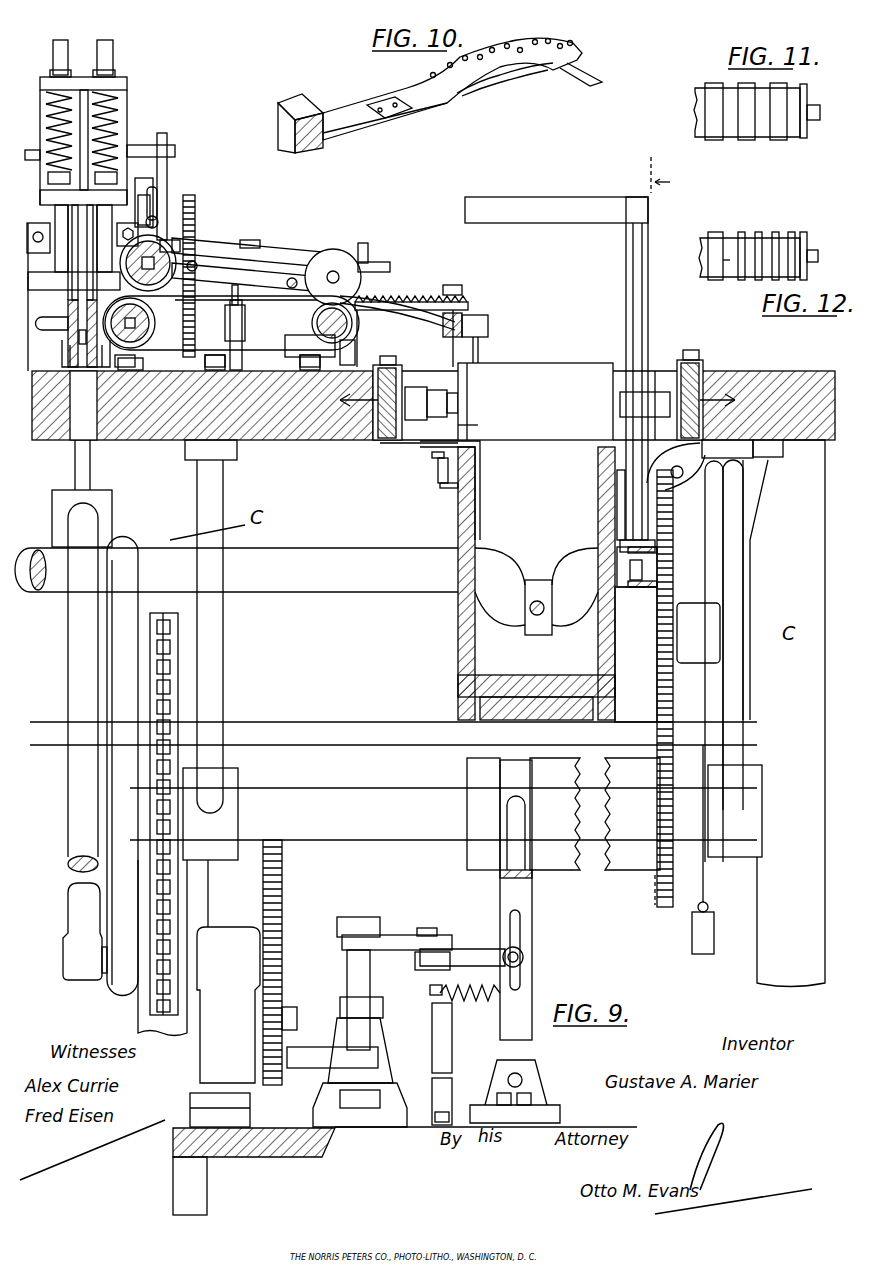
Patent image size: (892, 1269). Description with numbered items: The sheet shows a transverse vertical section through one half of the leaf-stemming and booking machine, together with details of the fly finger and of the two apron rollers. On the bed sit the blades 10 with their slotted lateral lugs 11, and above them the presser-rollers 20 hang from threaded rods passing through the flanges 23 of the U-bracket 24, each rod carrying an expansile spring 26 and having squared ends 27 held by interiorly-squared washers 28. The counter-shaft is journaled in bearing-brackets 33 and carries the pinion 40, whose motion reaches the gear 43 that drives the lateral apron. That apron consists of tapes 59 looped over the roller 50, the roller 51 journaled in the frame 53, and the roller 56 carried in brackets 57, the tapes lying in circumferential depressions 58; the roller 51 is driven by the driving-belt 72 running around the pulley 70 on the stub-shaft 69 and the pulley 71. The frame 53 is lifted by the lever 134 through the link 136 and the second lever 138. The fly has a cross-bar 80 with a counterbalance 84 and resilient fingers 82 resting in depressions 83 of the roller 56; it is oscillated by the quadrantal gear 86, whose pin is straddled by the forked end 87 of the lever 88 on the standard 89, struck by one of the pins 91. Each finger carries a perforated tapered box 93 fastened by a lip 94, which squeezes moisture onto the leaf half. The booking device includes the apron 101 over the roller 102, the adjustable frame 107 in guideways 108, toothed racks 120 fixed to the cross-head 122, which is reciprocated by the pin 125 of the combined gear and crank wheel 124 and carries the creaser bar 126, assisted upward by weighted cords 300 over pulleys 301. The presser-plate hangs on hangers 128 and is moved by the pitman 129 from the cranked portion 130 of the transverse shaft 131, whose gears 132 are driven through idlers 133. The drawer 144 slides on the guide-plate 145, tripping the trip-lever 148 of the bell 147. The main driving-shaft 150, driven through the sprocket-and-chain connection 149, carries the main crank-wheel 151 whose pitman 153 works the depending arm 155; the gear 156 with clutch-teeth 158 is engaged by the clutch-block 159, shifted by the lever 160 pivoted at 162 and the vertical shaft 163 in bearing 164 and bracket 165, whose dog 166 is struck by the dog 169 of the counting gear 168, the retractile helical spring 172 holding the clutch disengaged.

In FIG. 9, the blades 10 is at (433, 405).
In FIG. 9, the slotted lateral lugs 11 is at (62, 358).
In FIG. 9, the presser-rollers 20 is at (73, 285).
In FIG. 9, the flanges 23 is at (127, 82).
In FIG. 9, the U-bracket 24 is at (40, 100).
In FIG. 9, the expansile spring 26 is at (120, 108).
In FIG. 9, the squared upper ends of rods 27 is at (97, 40).
In FIG. 9, the interiorly-squared washers 28 is at (120, 77).
In FIG. 9, the bearing-brackets 33 is at (165, 250).
In FIG. 9, the pinion 40 is at (195, 200).
In FIG. 9, the pinion (gear) 43 is at (185, 355).
In FIG. 9, the roller 50 is at (128, 370).
In FIG. 11, the roller 50 is at (780, 130).
In FIG. 9, the roller 51 is at (240, 250).
In FIG. 9, the frame 53 is at (300, 265).
In FIG. 9, the roller 56 is at (330, 357).
In FIG. 12, the roller 56 is at (775, 235).
In FIG. 9, the brackets 57 is at (345, 365).
In FIG. 9, the circumferential depressions 58 is at (160, 345).
In FIG. 11, the circumferential depressions 58 is at (730, 128).
In FIG. 12, the circumferential depressions 58 is at (730, 240).
In FIG. 9, the tapes 59 is at (290, 355).
In FIG. 9, the stub-shaft 69 is at (339, 275).
In FIG. 9, the pulley 70 is at (333, 250).
In FIG. 9, the pulley 71 is at (180, 245).
In FIG. 9, the driving-belt 72 is at (231, 326).
In FIG. 9, the cross-bar 80 is at (462, 318).
In FIG. 10, the cross-bar 80 is at (300, 100).
In FIG. 9, the fingers 82 is at (415, 310).
In FIG. 10, the fingers 82 is at (345, 128).
In FIG. 12, the circumferential depressions 83 is at (718, 265).
In FIG. 9, the counterbalance 84 is at (488, 327).
In FIG. 9, the quadrantal gear 86 is at (410, 280).
In FIG. 9, the forked end 87 is at (375, 262).
In FIG. 9, the lever 88 is at (167, 160).
In FIG. 9, the standard 89 is at (250, 240).
In FIG. 9, the pins 91 is at (150, 195).
In FIG. 10, the perforated tapered boxes 93 is at (492, 48).
In FIG. 10, the lip 94 is at (385, 100).
In FIG. 9, the apron 101 is at (535, 401).
In FIG. 9, the roller 102 is at (467, 422).
In FIG. 9, the adjustable frame 107 is at (438, 460).
In FIG. 9, the guideways 108 is at (385, 445).
In FIG. 9, the toothed racks 120 is at (648, 320).
In FIG. 9, the cross-head 122 is at (640, 587).
In FIG. 9, the combined gear and crank wheel 124 is at (677, 635).
In FIG. 9, the pin 125 is at (638, 565).
In FIG. 9, the angular bar (creaser) 126 is at (626, 275).
In FIG. 9, the hangers 128 is at (482, 515).
In FIG. 9, the pitman 129 is at (537, 635).
In FIG. 9, the cranked portion 130 is at (500, 610).
In FIG. 9, the transverse shaft 131 is at (386, 694).
In FIG. 9, the gears 132 is at (707, 483).
In FIG. 9, the idlers 133 is at (717, 518).
In FIG. 9, the lever 134 is at (155, 218).
In FIG. 9, the link 136 is at (157, 215).
In FIG. 9, the second lever 138 is at (145, 178).
In FIG. 9, the drawer 144 is at (458, 645).
In FIG. 9, the guide-plate 145 is at (467, 758).
In FIG. 9, the bell 147 is at (440, 483).
In FIG. 9, the trip-lever 148 is at (446, 488).
In FIG. 9, the sprocket-and-chain connection 149 is at (170, 648).
In FIG. 9, the main driving-shaft 150 is at (274, 650).
In FIG. 9, the main crank-wheel 151 is at (125, 560).
In FIG. 9, the pitman 153 is at (68, 698).
In FIG. 9, the depending arm 155 is at (75, 470).
In FIG. 9, the gear 156 is at (665, 907).
In FIG. 9, the clutch-teeth 158 is at (607, 870).
In FIG. 9, the clutch-block 159 is at (557, 870).
In FIG. 9, the lever 160 is at (500, 903).
In FIG. 9, the pivot 162 is at (520, 1078).
In FIG. 9, the vertical shaft 163 is at (347, 975).
In FIG. 9, the bearing 164 is at (365, 1120).
In FIG. 9, the bracket 165 is at (400, 1040).
In FIG. 9, the dog 166 is at (305, 1068).
In FIG. 9, the gear 168 is at (282, 880).
In FIG. 9, the dog 169 is at (297, 1018).
In FIG. 9, the retractile helical spring 172 is at (470, 1000).
In FIG. 9, the weighted cords 300 is at (703, 880).
In FIG. 9, the pulleys 301 is at (742, 450).